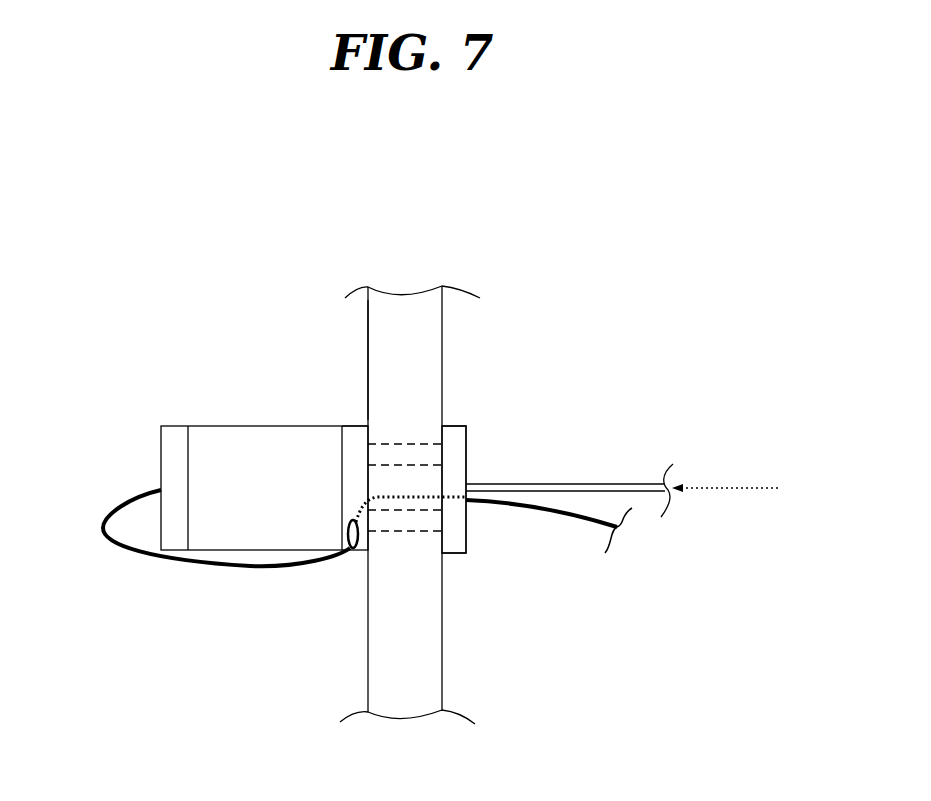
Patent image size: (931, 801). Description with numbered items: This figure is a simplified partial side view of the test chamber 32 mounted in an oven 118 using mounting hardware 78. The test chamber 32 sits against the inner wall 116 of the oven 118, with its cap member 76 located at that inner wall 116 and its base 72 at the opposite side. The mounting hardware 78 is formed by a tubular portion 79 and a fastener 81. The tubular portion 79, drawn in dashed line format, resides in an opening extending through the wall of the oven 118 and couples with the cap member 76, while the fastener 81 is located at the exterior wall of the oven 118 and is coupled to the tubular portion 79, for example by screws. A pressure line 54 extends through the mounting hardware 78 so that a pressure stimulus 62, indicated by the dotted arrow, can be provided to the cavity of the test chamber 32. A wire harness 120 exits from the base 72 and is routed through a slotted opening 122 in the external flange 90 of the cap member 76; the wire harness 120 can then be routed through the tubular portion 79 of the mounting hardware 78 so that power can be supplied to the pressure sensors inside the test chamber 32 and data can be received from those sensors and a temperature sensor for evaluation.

The test chamber 32 is at (237, 427).
The pressure line 54 is at (645, 484).
The pressure stimulus 62 is at (703, 488).
The base 72 is at (172, 432).
The cap member 76 is at (358, 430).
The mounting hardware 78 is at (482, 425).
The tubular portion 79 is at (402, 525).
The fastener 81 is at (462, 535).
The external flange 90 is at (347, 433).
The inner wall 116 is at (366, 355).
The oven 118 is at (407, 308).
The wire harness 120 is at (442, 375).
The slotted opening 122 is at (358, 548).